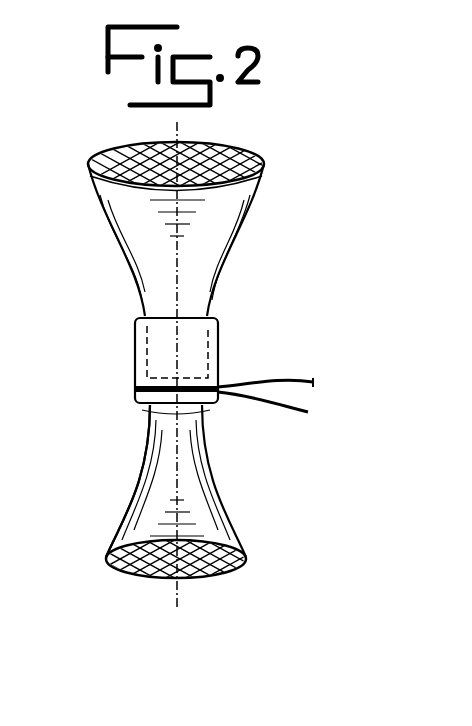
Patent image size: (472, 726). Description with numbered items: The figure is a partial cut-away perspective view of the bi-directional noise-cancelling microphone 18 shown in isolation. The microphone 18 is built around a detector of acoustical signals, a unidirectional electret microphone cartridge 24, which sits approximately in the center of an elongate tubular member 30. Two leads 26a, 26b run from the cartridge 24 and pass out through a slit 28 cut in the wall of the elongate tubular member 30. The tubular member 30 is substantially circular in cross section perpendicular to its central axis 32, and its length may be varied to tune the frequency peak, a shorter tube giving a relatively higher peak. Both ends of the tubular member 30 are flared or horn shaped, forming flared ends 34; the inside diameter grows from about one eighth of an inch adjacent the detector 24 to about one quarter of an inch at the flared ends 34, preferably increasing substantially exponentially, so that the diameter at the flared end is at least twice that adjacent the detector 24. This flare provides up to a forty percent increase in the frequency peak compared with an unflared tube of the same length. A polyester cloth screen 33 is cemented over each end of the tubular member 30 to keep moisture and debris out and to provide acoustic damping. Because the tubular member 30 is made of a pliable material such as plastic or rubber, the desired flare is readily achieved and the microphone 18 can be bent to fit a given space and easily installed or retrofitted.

The microphone 18 is at (190, 371).
The unidirectional electret microphone cartridge 24 is at (200, 352).
The lead 26a is at (296, 386).
The lead 26b is at (303, 417).
The slit 28 is at (176, 390).
The elongate tubular member 30 is at (143, 485).
The central axis 32 is at (168, 590).
The polyester cloth screen 33 is at (228, 148).
The flared ends 34 is at (104, 197).